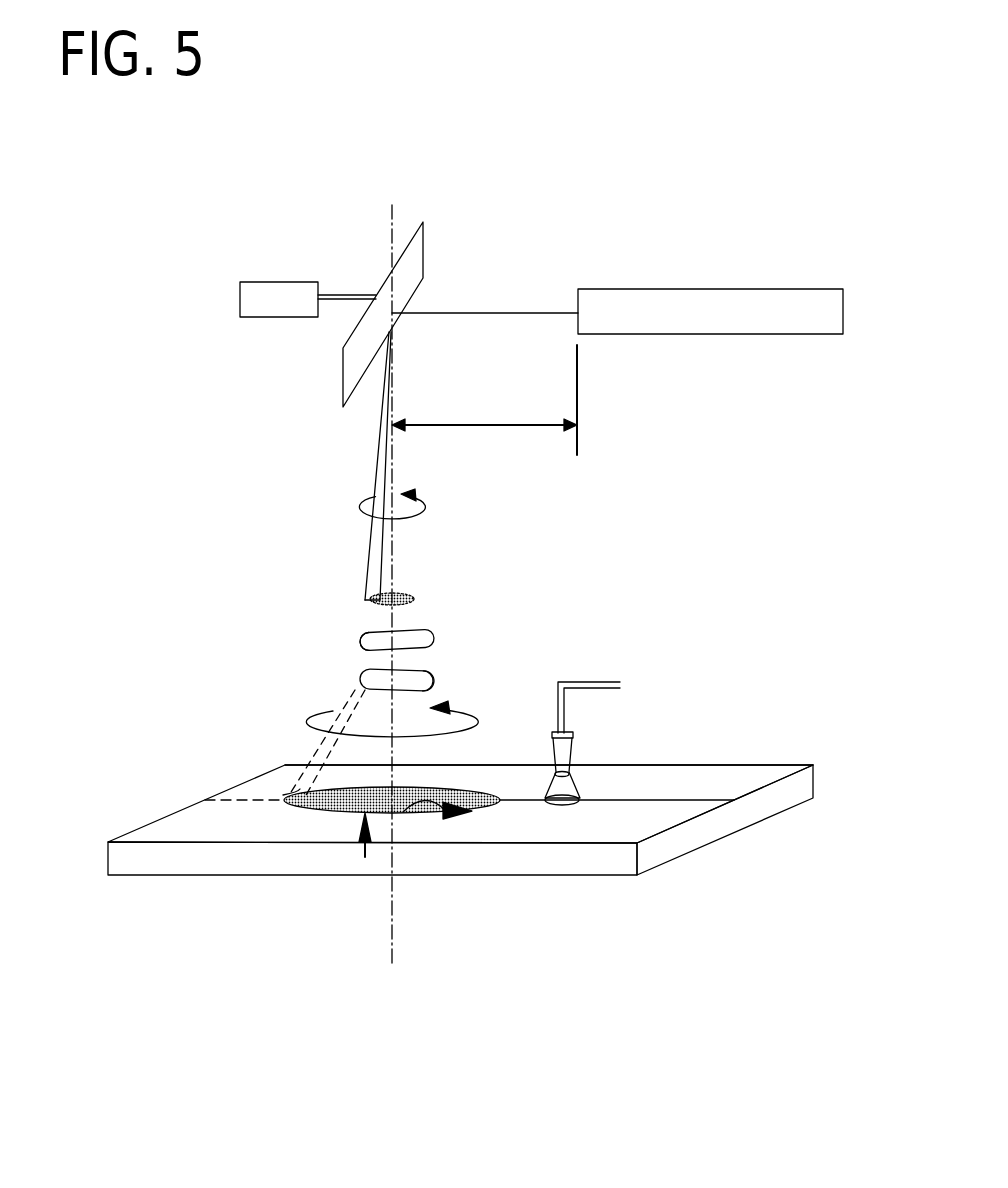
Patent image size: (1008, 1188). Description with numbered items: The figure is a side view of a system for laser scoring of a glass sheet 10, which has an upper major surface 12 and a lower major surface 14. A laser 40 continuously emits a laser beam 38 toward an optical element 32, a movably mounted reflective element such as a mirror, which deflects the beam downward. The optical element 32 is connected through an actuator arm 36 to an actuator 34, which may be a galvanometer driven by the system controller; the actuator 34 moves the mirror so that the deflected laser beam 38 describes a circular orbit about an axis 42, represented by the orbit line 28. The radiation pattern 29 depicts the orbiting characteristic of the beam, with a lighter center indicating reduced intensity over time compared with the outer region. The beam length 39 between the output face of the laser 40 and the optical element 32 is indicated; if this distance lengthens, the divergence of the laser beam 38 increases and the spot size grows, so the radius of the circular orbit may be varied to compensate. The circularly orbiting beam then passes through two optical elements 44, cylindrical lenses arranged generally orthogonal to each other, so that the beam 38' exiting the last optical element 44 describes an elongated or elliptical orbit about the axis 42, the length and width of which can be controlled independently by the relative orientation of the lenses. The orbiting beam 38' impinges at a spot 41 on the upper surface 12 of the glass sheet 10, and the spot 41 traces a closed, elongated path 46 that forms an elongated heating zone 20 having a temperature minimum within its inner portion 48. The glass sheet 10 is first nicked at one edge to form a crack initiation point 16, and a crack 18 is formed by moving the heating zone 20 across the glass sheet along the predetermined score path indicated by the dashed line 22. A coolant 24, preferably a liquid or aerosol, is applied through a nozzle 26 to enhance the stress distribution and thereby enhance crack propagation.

The glass sheet 10 is at (815, 780).
The upper major surface 12 is at (447, 737).
The lower major surface 14 is at (565, 877).
The crack initiation point 16 is at (733, 813).
The crack 18 is at (645, 800).
The heating zone 20 is at (365, 858).
The dashed line 22 is at (257, 800).
The coolant 24 is at (578, 791).
The nozzle 26 is at (550, 745).
The orbit line 28 is at (413, 520).
The radiation pattern 29 is at (415, 597).
The optical element 32 is at (415, 295).
The actuator 34 is at (278, 282).
The actuator arm 36 is at (347, 295).
The laser beam 38 is at (418, 456).
The beam exiting last optical element 38' is at (278, 711).
The beam length 39 is at (470, 430).
The laser 40 is at (670, 334).
The spot 41 is at (282, 802).
The axis 42 is at (392, 217).
The optical element 44 is at (365, 688).
The closed elongated path 46 is at (317, 812).
The inner portion 48 is at (427, 817).